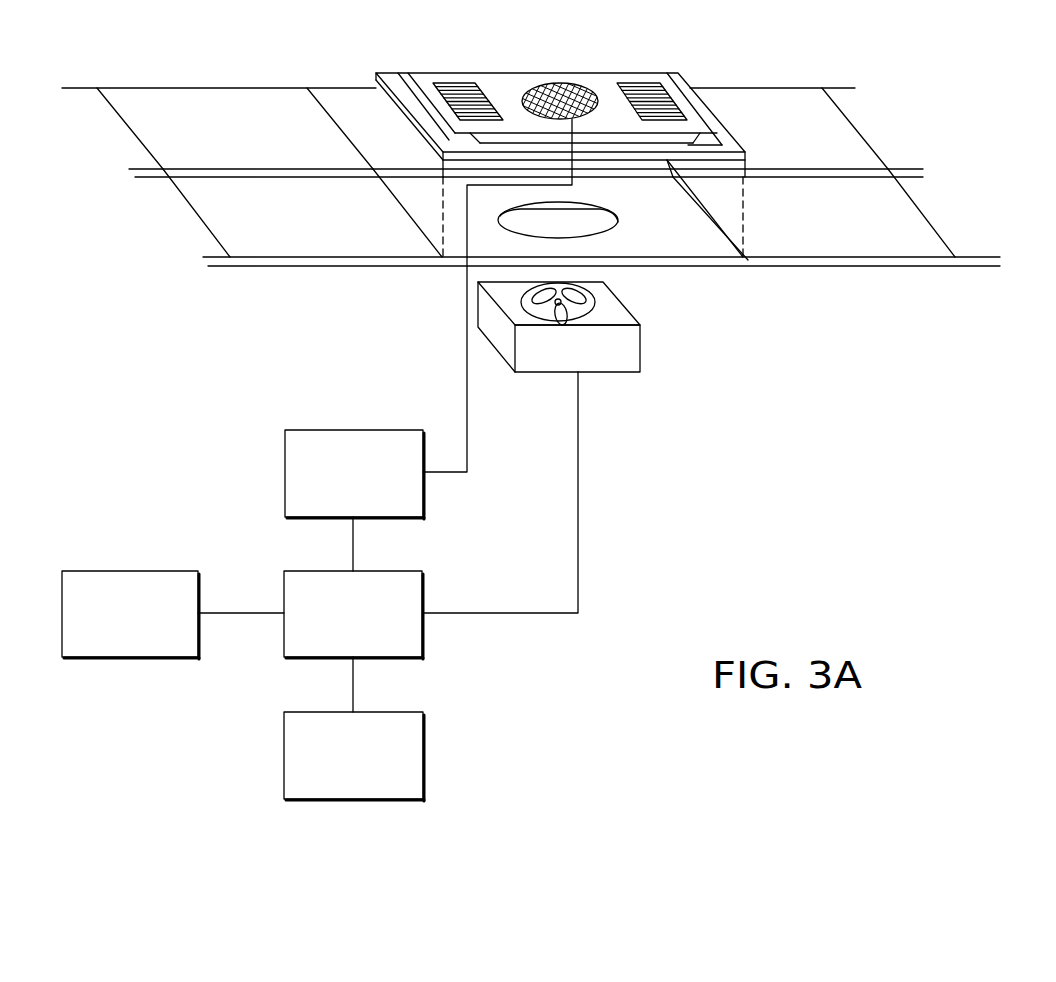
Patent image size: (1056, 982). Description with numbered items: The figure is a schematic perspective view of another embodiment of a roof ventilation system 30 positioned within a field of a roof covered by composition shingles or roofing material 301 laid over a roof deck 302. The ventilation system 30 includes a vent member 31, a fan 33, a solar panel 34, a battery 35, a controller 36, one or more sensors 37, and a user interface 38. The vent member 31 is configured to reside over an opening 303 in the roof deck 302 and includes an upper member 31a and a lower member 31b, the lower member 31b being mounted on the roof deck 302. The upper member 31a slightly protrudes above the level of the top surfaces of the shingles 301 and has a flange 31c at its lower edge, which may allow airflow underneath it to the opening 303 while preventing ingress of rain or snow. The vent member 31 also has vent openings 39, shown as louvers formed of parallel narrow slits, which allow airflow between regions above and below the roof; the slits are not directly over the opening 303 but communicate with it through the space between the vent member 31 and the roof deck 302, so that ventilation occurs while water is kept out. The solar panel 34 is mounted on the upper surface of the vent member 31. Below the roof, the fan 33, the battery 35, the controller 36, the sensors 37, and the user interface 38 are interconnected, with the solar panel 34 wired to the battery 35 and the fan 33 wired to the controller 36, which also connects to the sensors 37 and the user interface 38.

The ventilation system 30 is at (715, 37).
The vent member 31 is at (637, 75).
The upper member 31a is at (605, 80).
The lower member 31b is at (702, 107).
The flange 31c is at (688, 142).
The fan 33 is at (625, 347).
The solar panel 34 is at (560, 84).
The battery 35 is at (383, 430).
The controller 36 is at (383, 571).
The sensors 37 is at (160, 571).
The user interface 38 is at (383, 712).
The vent openings 39 is at (460, 83).
The composition shingles 301 is at (790, 100).
The roof deck 302 is at (627, 255).
The opening 303 is at (593, 223).